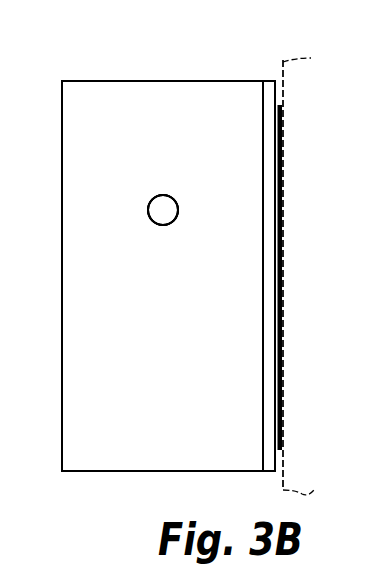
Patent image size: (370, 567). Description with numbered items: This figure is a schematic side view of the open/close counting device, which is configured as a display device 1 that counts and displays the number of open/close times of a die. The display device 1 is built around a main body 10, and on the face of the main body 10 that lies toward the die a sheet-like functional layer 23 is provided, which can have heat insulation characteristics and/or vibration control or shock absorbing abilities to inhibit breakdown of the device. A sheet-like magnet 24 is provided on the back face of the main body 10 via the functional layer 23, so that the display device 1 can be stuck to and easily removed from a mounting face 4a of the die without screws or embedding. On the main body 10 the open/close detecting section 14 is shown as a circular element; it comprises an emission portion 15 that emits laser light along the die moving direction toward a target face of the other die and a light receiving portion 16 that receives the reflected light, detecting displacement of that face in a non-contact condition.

The display device 1 is at (74, 54).
The main body 10 is at (80, 348).
The functional layer 23 is at (268, 226).
The magnet 24 is at (278, 333).
The mounting face 4a is at (283, 73).
The emission portion 15 is at (165, 223).
The light receiving portion 16 is at (163, 210).
The open/close detecting section 14 is at (163, 210).